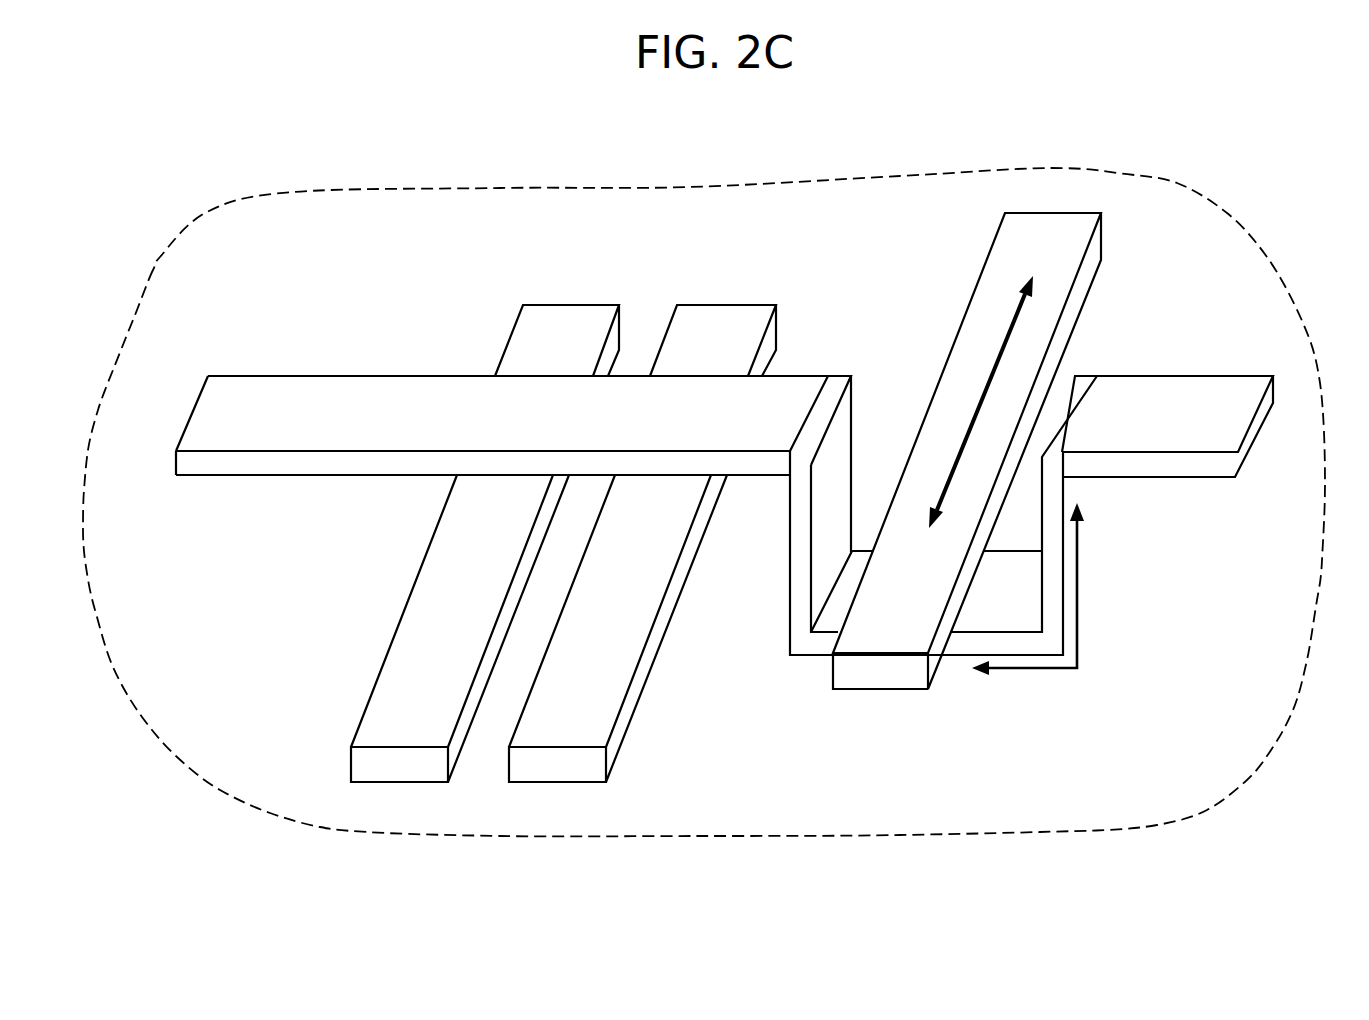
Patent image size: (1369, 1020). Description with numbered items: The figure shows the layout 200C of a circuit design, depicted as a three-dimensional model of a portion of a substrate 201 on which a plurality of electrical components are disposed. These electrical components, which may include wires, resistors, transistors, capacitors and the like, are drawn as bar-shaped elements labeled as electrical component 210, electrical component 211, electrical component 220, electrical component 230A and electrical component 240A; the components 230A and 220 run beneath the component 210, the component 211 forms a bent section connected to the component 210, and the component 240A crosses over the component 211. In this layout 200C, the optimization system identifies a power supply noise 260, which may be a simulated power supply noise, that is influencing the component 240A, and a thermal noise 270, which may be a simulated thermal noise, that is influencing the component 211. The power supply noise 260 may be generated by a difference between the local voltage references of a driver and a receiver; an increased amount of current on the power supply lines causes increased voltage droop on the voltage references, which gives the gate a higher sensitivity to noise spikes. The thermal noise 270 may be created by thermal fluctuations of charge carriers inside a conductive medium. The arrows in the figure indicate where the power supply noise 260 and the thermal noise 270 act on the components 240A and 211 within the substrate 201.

The layout 200C is at (142, 95).
The substrate 201 is at (253, 262).
The electrical component 210 is at (466, 426).
The electrical component 211 is at (1024, 625).
The electrical component 220 is at (606, 670).
The electrical component 230A is at (458, 670).
The electrical component 240A is at (939, 577).
The power supply noise 260 is at (970, 425).
The thermal noise 270 is at (1050, 668).